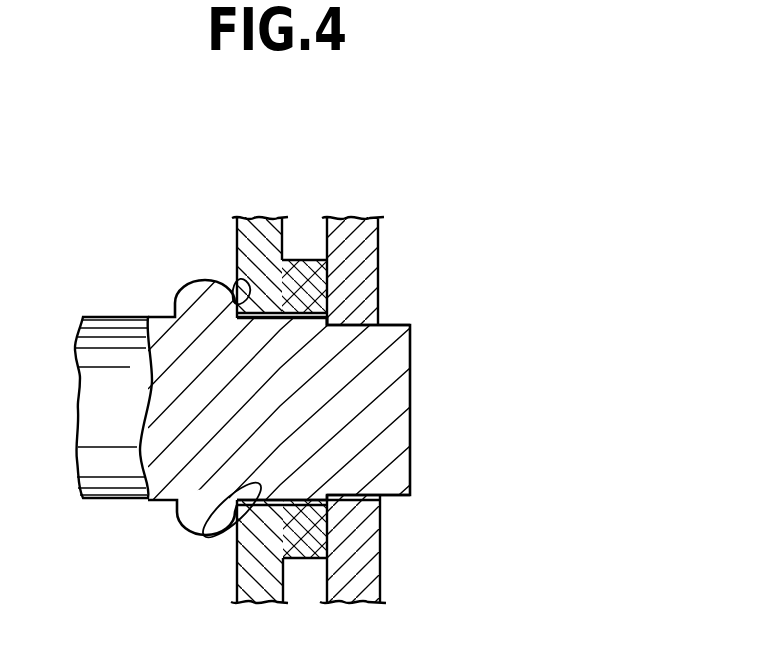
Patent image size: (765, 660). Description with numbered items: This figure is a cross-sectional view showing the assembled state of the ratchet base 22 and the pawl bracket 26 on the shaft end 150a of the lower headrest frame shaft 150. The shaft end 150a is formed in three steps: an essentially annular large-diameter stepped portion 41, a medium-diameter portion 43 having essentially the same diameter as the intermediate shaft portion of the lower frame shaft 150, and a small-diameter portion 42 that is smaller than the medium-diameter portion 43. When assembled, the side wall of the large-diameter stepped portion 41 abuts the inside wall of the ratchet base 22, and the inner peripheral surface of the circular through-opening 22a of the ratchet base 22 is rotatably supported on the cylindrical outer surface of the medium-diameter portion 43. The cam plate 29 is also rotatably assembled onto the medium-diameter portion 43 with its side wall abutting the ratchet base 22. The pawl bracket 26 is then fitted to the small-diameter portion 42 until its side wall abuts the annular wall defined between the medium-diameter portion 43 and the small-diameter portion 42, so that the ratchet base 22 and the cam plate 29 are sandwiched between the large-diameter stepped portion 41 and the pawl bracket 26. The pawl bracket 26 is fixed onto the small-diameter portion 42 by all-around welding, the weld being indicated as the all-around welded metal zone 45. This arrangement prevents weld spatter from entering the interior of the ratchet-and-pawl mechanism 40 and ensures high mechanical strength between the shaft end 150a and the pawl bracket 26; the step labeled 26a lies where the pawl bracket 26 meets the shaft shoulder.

The ratchet-and-pawl mechanism 40 is at (400, 208).
The ratchet base 22 is at (258, 243).
The large-diameter stepped portion 41 is at (236, 277).
The cam plate 29 is at (312, 280).
The pawl bracket 26 is at (364, 300).
The race shoulder 26a is at (352, 325).
The shaft end 150a is at (412, 410).
The lower headrest frame shaft 150 is at (121, 483).
The small-diameter portion 42 is at (397, 495).
The all-around welded metal zone 45 is at (340, 504).
The medium-diameter portion 43 is at (355, 520).
The circular through-opening 22a is at (236, 504).